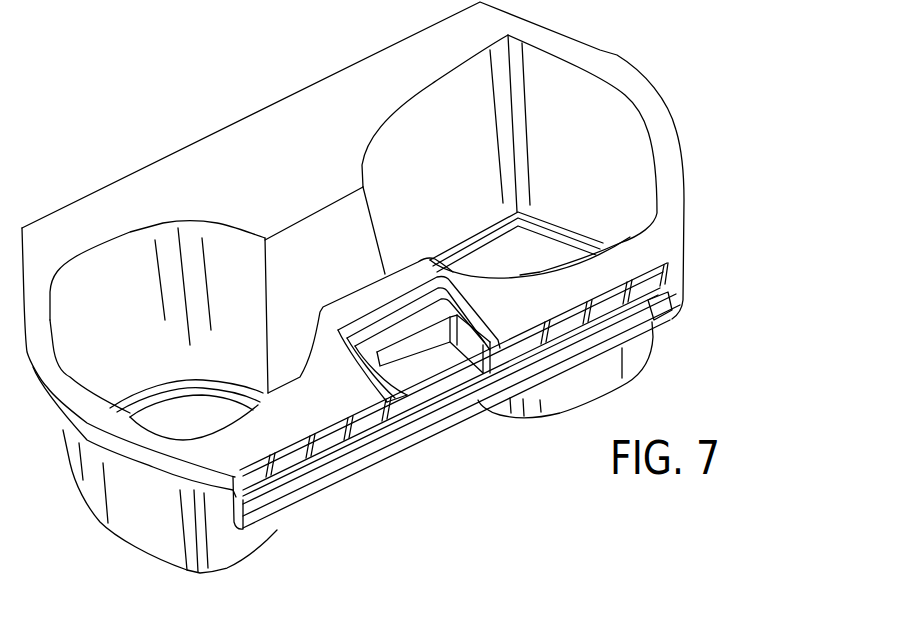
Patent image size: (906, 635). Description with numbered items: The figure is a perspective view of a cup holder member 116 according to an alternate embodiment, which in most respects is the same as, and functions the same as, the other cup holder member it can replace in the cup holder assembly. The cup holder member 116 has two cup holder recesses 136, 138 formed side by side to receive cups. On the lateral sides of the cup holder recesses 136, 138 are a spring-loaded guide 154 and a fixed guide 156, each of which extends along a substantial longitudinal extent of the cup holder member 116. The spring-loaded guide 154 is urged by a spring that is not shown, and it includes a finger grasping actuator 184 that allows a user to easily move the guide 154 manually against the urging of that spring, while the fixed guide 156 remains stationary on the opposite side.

The cup holder member 116 is at (426, 287).
The cup holder recess 136 is at (545, 248).
The cup holder recess 138 is at (167, 423).
The spring-loaded guide 154 is at (463, 443).
The fixed guide 156 is at (210, 98).
The finger grasping actuator 184 is at (458, 328).